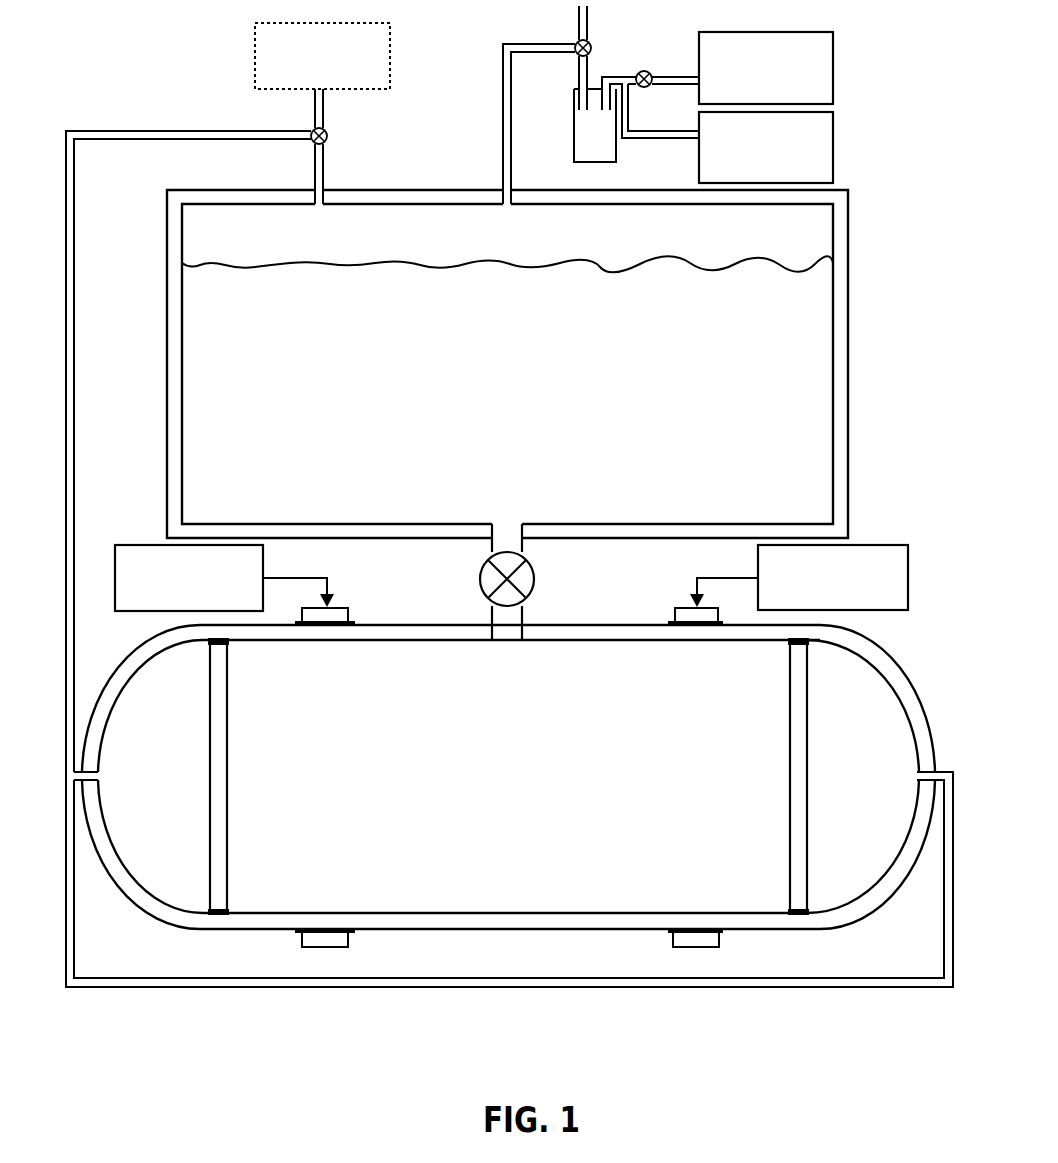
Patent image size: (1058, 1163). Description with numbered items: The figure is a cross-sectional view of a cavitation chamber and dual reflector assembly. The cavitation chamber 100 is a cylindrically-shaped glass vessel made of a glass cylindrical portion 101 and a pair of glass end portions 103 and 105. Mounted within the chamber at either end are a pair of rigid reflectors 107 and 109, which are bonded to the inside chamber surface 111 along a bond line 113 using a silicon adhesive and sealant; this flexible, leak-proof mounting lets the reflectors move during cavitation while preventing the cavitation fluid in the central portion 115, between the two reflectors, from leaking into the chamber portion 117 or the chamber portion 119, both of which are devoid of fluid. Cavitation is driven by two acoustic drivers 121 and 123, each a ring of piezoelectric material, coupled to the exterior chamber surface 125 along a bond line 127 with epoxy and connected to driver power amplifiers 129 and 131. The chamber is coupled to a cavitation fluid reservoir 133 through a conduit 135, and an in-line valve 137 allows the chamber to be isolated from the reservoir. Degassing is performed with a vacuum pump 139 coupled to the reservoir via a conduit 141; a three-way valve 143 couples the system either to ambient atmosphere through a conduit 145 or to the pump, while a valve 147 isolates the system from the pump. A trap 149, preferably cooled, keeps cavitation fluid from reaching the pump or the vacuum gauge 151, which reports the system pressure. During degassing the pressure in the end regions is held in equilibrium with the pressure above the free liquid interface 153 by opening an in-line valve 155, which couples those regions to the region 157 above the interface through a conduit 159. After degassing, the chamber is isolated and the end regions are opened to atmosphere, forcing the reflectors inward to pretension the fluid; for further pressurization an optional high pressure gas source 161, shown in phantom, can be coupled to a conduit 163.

The cavitation chamber 100 is at (508, 828).
The glass cylindrical portion 101 is at (508, 797).
The glass end portion 103 is at (120, 880).
The glass end portion 105 is at (882, 893).
The rigid reflector 107 is at (218, 763).
The rigid reflector 109 is at (790, 763).
The inside chamber surface 111 is at (738, 645).
The bond line 113 is at (228, 642).
The central portion 115 is at (513, 783).
The chamber portion 117 is at (172, 786).
The chamber portion 119 is at (868, 787).
The acoustic driver 121 is at (323, 941).
The acoustic driver 123 is at (695, 940).
The exterior chamber surface 125 is at (258, 935).
The bond line 127 is at (376, 929).
The driver power amplifier 129 is at (115, 578).
The driver power amplifier 131 is at (893, 545).
The cavitation fluid reservoir 133 is at (850, 364).
The conduit 135 is at (507, 617).
The in-line valve 137 is at (480, 579).
The vacuum pump 139 is at (835, 70).
The conduit 141 is at (503, 145).
The three-way valve 143 is at (592, 51).
The conduit 145 is at (575, 23).
The valve 147 is at (645, 70).
The trap 149 is at (574, 125).
The vacuum gauge 151 is at (835, 147).
The free liquid interface 153 is at (612, 262).
The in-line valve 155 is at (327, 137).
The region 157 is at (512, 245).
The conduit 159 is at (152, 131).
The high pressure gas source 161 is at (255, 57).
The conduit 163 is at (325, 101).